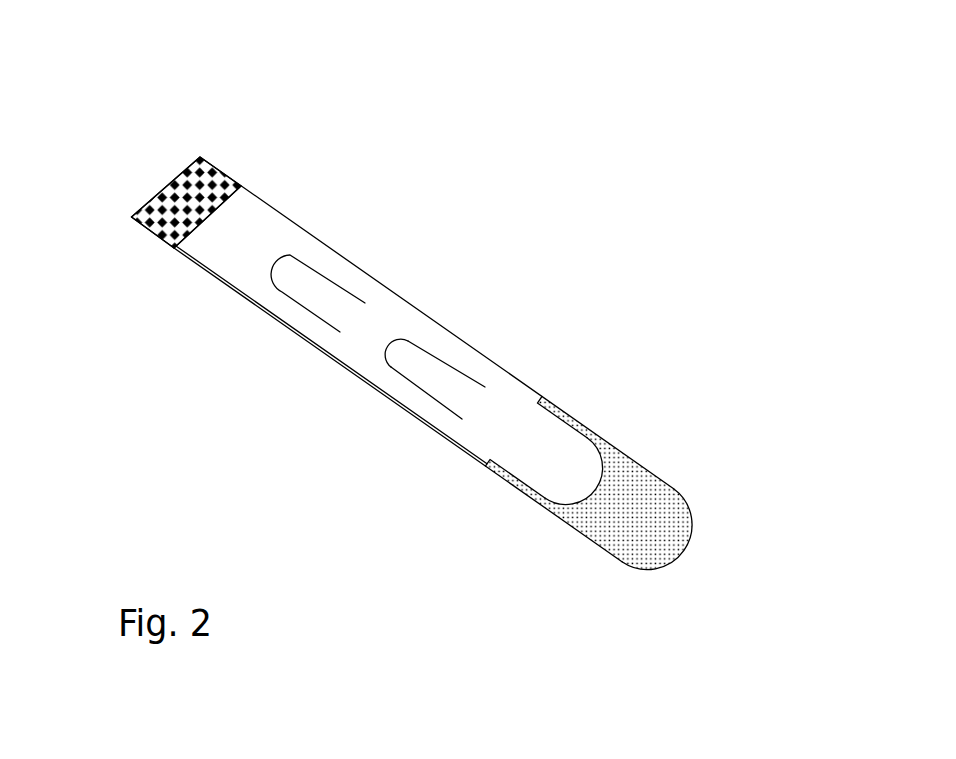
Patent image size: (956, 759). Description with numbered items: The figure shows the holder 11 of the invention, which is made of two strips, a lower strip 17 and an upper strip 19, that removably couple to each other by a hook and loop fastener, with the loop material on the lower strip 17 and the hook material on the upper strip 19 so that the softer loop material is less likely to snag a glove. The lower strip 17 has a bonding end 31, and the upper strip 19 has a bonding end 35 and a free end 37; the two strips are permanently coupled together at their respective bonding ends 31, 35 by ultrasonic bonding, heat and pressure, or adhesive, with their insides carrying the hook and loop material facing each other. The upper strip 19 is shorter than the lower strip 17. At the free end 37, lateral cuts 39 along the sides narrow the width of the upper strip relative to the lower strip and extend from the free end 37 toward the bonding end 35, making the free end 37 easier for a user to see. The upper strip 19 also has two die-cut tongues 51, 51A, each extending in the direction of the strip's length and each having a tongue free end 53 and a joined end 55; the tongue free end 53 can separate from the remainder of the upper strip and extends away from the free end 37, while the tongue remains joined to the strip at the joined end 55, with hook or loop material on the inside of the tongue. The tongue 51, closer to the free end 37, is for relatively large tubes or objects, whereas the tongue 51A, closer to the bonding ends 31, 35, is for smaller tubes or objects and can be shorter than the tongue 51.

The holder 11 is at (435, 359).
The lower strip 17 is at (652, 567).
The upper strip 19 is at (328, 343).
The bonding end 31 is at (169, 134).
The bonding end 35 is at (178, 193).
The free end 37 is at (598, 488).
The lateral cuts 39 is at (570, 425).
The tongue 51 is at (427, 387).
The tongue 51A is at (305, 282).
The tongue free end 53 is at (392, 348).
The joined end 55 is at (460, 402).